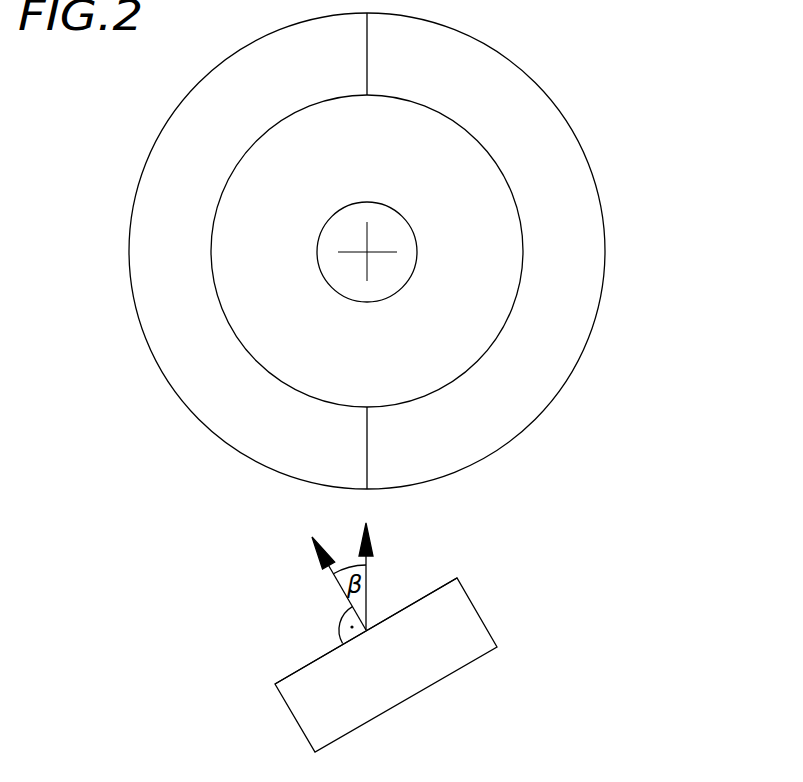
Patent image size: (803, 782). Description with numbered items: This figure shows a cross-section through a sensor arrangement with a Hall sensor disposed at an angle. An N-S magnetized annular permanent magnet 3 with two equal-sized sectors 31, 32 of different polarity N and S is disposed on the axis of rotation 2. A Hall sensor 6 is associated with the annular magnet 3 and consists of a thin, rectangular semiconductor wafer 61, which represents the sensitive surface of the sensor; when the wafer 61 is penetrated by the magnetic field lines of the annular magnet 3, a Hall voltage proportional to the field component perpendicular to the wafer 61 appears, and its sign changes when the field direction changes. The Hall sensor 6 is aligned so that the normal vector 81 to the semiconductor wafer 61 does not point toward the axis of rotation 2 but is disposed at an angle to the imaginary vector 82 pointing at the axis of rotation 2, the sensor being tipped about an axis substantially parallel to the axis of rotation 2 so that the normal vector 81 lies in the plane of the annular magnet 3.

The axis of rotation 2 is at (382, 273).
The annular permanent magnet 3 is at (406, 251).
The sector 31 is at (520, 118).
The sector 32 is at (193, 135).
The Hall sensor 6 is at (385, 681).
The semiconductor wafer 61 is at (284, 650).
The normal vector 81 is at (327, 583).
The vector pointing at the axis of rotation 82 is at (383, 576).